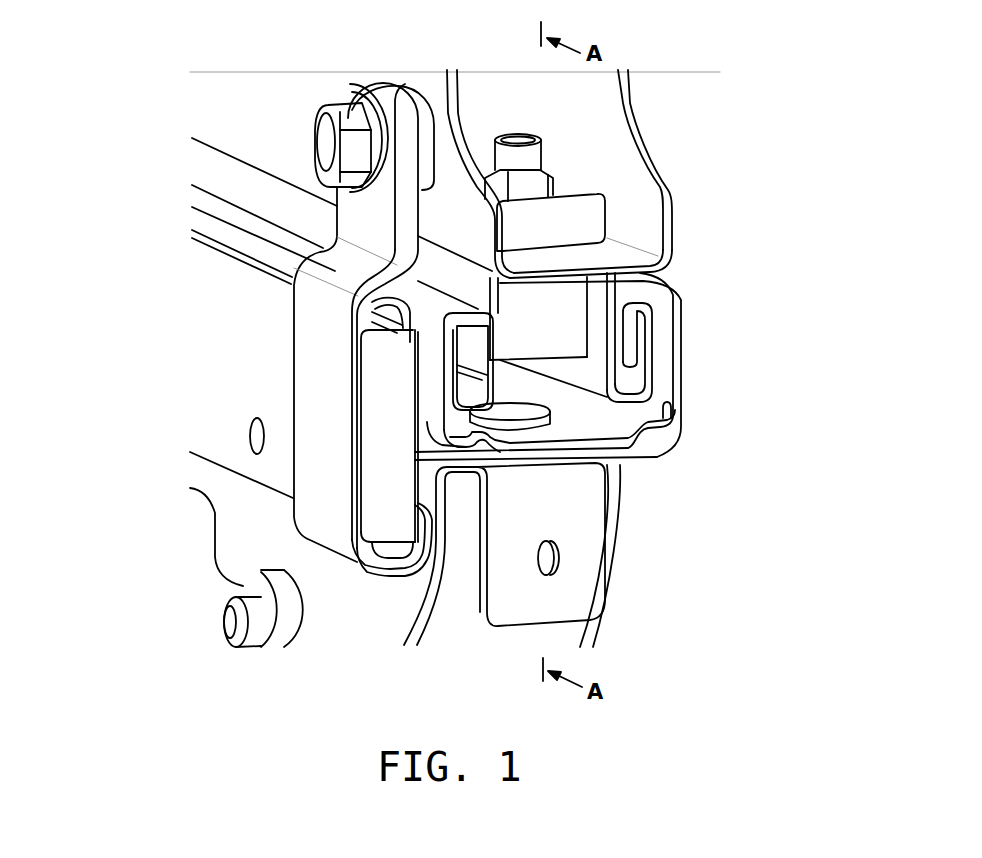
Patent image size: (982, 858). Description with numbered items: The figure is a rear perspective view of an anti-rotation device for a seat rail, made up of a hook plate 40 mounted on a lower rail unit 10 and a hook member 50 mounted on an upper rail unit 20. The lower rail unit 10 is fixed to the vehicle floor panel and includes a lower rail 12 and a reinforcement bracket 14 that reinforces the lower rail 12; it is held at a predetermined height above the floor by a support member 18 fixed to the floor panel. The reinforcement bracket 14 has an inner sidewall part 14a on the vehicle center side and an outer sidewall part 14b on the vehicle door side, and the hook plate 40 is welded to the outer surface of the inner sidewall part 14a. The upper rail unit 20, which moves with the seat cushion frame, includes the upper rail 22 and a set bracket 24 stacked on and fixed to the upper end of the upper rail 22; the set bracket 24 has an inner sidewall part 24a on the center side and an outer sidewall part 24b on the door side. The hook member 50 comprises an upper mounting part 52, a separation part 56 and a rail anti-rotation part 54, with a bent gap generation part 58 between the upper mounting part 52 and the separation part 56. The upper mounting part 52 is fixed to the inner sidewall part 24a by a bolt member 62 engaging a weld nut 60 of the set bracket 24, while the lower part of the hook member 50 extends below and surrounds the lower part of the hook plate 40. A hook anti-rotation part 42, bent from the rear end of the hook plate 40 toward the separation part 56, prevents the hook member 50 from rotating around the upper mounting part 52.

The lower rail unit 10 is at (628, 380).
The lower rail 12 is at (675, 418).
The reinforcement bracket 14 is at (611, 380).
The inner sidewall part 14a is at (230, 242).
The outer sidewall part 14b is at (678, 297).
The support member 18 is at (400, 608).
The upper rail unit 20 is at (636, 214).
The upper rail 22 is at (607, 275).
The set bracket 24 is at (618, 155).
The inner sidewall part 24a is at (447, 157).
The outer sidewall part 24b is at (635, 114).
The hook plate 40 is at (287, 392).
The hook anti-rotation part 42 is at (377, 495).
The hook member 50 is at (322, 212).
The upper mounting part 52 is at (383, 90).
The rail anti-rotation part 54 is at (370, 560).
The separation part 56 is at (307, 410).
The gap generation part 58 is at (290, 252).
The weld nut 60 is at (412, 98).
The bolt member 62 is at (343, 114).